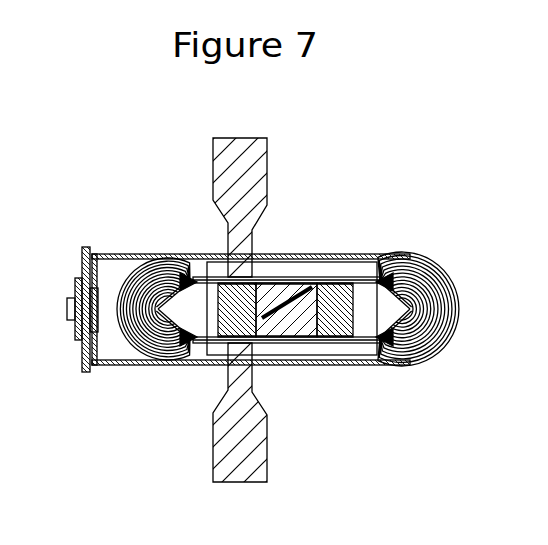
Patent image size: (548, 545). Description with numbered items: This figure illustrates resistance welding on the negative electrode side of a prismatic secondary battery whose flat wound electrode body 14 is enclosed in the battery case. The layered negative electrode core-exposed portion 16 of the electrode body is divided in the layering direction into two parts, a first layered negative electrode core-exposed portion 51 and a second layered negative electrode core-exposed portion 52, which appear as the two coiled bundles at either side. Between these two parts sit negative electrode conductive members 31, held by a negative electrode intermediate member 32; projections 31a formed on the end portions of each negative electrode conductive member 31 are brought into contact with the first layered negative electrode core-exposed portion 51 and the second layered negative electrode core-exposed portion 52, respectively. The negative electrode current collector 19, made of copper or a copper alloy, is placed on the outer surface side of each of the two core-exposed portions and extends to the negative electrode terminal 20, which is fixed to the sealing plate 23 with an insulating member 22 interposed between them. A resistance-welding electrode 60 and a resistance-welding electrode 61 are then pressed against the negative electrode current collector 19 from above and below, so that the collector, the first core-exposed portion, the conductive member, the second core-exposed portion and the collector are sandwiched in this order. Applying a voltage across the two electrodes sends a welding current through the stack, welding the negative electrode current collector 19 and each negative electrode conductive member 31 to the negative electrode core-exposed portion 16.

The flat wound electrode body 14 is at (408, 335).
The layered negative electrode core-exposed portion 16 is at (456, 313).
The negative electrode current collector 19 is at (118, 256).
The negative electrode terminal 20 is at (68, 322).
The insulating member 22 is at (74, 281).
The sealing plate 23 is at (93, 362).
The negative electrode conductive member 31 is at (211, 270).
The projection 31a is at (244, 283).
The negative electrode intermediate member 32 is at (284, 340).
The first layered negative electrode core-exposed portion 51 is at (313, 277).
The second layered negative electrode core-exposed portion 52 is at (313, 343).
The resistance-welding electrode 60 is at (230, 153).
The resistance-welding electrode 61 is at (226, 467).